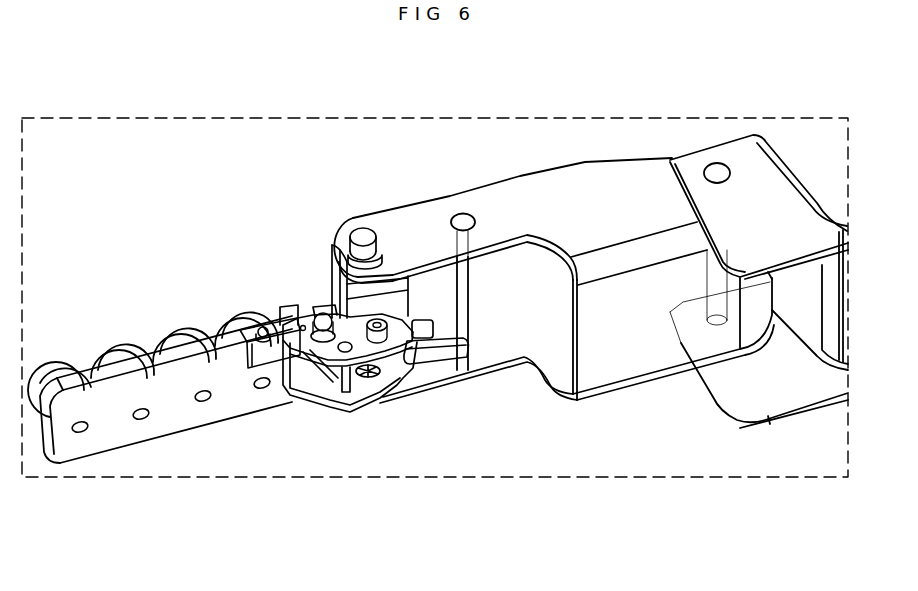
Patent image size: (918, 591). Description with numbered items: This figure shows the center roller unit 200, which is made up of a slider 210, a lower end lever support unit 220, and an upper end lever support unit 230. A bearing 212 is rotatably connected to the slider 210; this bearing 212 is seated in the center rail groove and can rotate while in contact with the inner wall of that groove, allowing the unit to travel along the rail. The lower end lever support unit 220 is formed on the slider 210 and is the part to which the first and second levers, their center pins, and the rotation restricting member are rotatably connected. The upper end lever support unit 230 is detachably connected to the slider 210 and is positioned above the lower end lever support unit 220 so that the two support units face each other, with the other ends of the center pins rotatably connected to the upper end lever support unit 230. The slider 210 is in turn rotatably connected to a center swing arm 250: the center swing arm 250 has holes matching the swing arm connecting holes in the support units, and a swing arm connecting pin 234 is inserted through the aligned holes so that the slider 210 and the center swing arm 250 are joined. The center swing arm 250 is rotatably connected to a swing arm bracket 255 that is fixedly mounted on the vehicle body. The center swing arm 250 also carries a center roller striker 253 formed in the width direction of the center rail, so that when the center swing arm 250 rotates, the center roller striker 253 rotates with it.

The center roller unit 200 is at (243, 431).
The slider 210 is at (172, 413).
The bearing 212 is at (66, 377).
The lower end lever support unit 220 is at (365, 393).
The upper end lever support unit 230 is at (358, 300).
The swing arm connecting pin 234 is at (362, 240).
The center swing arm 250 is at (593, 184).
The center roller striker 253 is at (465, 283).
The swing arm bracket 255 is at (743, 397).